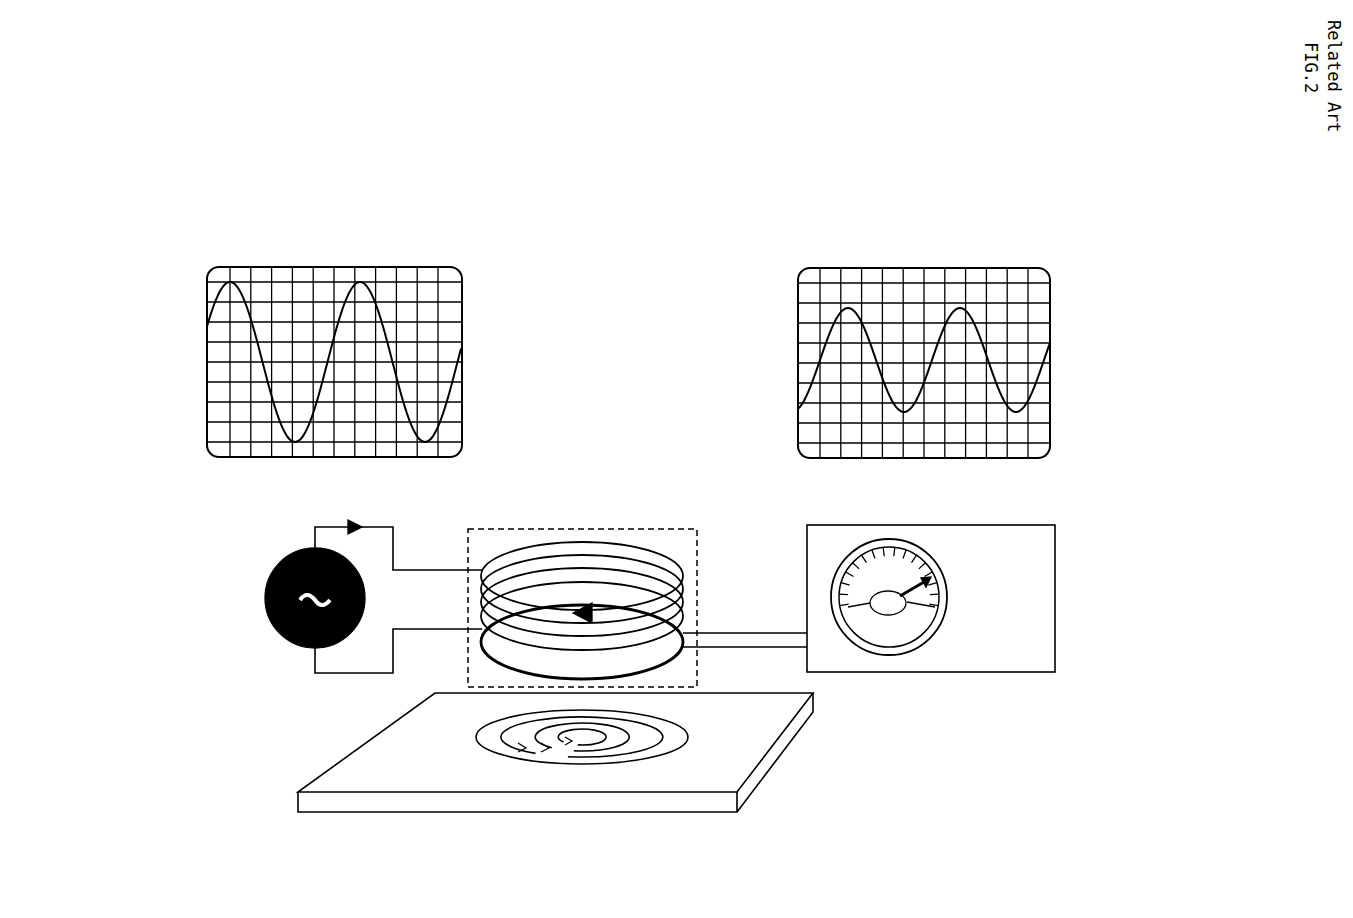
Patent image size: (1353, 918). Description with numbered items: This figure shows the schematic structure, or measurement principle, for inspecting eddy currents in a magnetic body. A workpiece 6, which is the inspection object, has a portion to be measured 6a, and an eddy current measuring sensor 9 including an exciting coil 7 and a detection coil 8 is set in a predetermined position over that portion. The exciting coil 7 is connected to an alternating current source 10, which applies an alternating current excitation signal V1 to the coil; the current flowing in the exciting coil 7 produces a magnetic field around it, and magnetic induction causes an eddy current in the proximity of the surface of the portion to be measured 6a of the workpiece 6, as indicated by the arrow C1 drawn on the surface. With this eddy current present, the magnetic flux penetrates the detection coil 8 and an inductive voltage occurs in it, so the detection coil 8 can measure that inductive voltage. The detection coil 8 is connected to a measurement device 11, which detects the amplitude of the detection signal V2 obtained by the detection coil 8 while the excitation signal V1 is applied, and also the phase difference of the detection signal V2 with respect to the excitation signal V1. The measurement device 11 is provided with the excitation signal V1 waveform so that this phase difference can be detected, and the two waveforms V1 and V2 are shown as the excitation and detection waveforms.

The workpiece 6 is at (338, 758).
The portion to be measured 6a is at (482, 742).
The exciting coil 7 is at (635, 547).
The detection coil 8 is at (497, 662).
The eddy current measuring sensor 9 is at (542, 529).
The alternating current source 10 is at (277, 562).
The measurement device 11 is at (988, 525).
The alternating current excitation signal V1 is at (380, 313).
The detection signal V2 is at (973, 315).
The eddy current arrow C1 is at (658, 730).